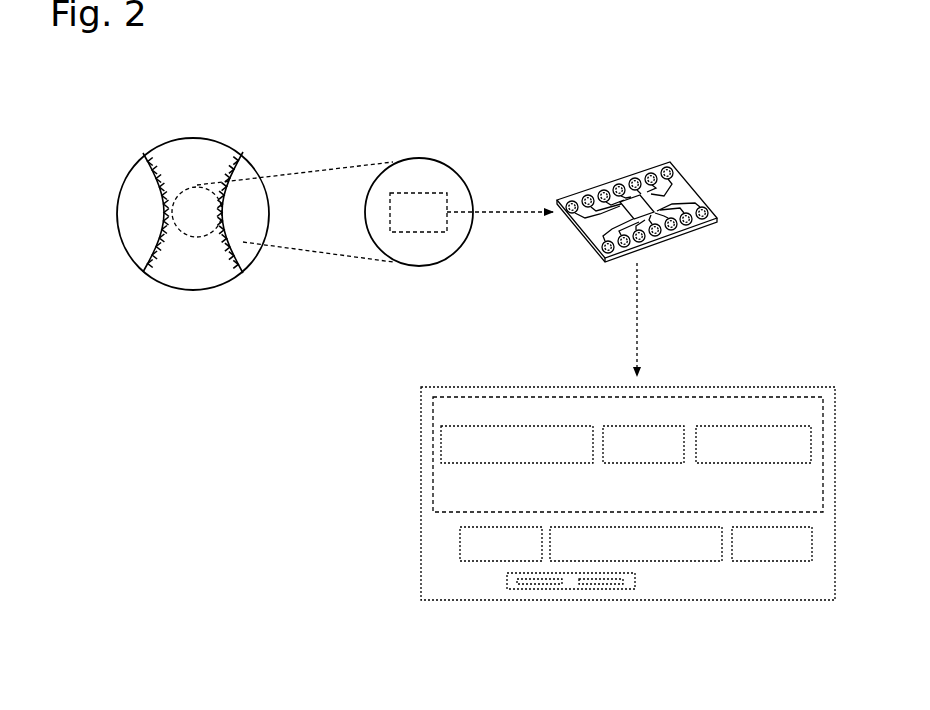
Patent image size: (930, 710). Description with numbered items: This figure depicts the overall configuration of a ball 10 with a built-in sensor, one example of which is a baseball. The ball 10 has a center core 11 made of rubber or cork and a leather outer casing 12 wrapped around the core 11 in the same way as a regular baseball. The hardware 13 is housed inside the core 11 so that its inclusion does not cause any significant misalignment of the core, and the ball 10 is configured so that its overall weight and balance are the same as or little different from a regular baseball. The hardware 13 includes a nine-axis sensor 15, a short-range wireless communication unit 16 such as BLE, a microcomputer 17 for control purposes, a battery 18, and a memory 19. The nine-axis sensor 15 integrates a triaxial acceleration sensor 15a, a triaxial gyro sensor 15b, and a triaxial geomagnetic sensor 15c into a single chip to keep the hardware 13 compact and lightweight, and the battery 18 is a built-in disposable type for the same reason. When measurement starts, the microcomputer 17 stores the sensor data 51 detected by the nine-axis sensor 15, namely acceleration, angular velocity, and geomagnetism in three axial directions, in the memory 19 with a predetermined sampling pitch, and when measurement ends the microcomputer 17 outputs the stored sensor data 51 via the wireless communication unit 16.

The ball 10 is at (186, 130).
The leather outer casing 12 is at (200, 137).
The center core 11 is at (197, 186).
The hardware 13 is at (435, 192).
The nine-axis sensor 15 is at (438, 406).
The triaxial acceleration sensor 15a is at (441, 440).
The triaxial gyro sensor 15b is at (642, 463).
The triaxial geomagnetic sensor 15c is at (753, 463).
The short-range wireless communication unit 16 is at (472, 552).
The microcomputer 17 is at (657, 561).
The battery 18 is at (767, 561).
The memory 19 is at (568, 589).
The sensor data 51 is at (540, 589).